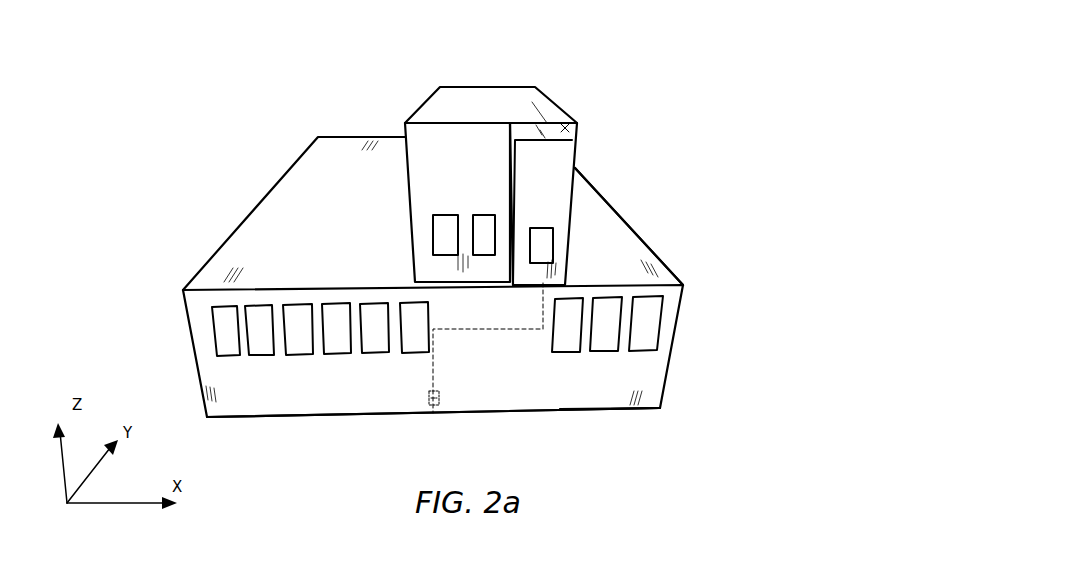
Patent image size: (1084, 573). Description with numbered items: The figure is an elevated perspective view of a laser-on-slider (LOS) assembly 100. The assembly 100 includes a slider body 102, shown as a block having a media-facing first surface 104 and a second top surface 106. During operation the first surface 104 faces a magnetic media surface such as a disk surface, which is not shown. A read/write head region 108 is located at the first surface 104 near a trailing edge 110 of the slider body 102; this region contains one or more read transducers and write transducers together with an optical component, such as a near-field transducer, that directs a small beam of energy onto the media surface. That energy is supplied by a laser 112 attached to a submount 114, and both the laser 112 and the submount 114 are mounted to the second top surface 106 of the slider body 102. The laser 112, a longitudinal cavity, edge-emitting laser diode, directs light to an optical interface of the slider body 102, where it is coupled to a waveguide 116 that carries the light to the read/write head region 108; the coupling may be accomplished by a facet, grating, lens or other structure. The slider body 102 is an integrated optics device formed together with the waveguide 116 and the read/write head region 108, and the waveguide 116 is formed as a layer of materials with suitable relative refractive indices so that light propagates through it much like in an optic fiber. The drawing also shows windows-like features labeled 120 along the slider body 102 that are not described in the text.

The LOS assembly 100 is at (460, 234).
The slider body 102 is at (262, 163).
The media-facing first surface 104 is at (620, 410).
The second top surface 106 is at (640, 253).
The read/write head region 108 is at (434, 409).
The trailing edge 110 is at (288, 400).
The laser 112 is at (578, 124).
The submount 114 is at (543, 93).
The waveguide 116 is at (474, 332).
The windows 120 is at (263, 354).